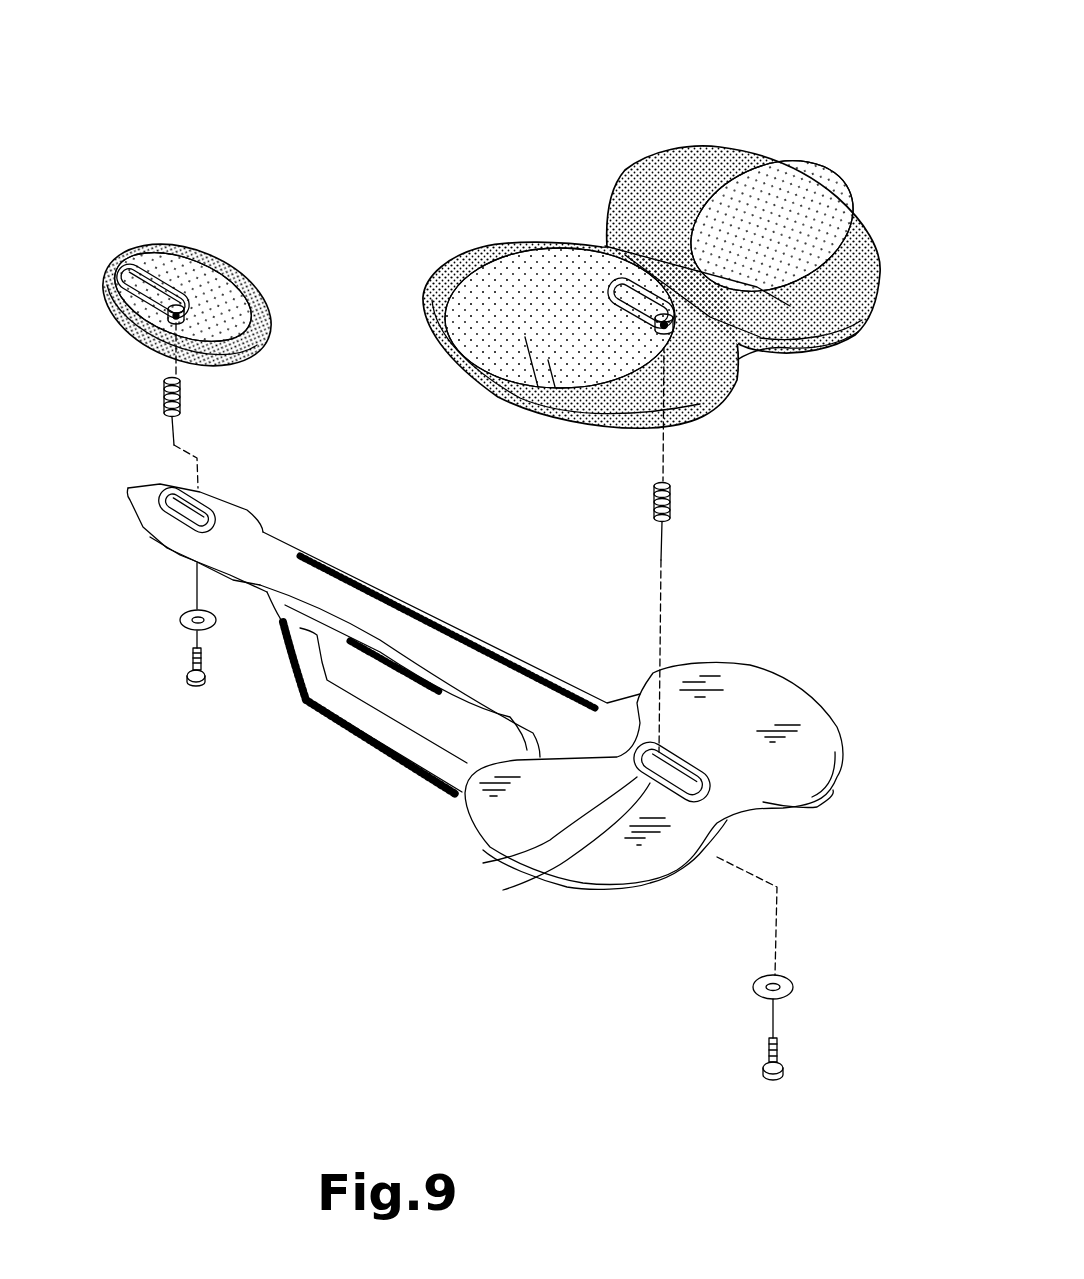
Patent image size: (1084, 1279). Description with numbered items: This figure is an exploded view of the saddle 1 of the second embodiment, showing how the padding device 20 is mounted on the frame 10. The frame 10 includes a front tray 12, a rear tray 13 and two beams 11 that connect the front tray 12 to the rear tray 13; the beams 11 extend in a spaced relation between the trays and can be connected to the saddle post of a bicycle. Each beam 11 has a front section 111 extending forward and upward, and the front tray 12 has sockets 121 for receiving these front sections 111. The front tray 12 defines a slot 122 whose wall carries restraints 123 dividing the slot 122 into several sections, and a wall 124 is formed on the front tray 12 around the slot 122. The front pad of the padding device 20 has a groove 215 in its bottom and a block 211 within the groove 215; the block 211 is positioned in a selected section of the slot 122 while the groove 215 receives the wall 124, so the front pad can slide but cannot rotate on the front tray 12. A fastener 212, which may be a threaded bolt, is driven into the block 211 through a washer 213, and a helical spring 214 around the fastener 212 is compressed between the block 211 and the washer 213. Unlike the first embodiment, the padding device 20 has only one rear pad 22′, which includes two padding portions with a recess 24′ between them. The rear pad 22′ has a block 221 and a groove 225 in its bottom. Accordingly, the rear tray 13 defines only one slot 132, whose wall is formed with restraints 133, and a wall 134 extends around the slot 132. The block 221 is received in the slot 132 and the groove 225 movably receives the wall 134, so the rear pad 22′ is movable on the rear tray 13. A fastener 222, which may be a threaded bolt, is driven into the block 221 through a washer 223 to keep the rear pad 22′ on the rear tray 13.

The saddle 1 is at (303, 161).
The frame 10 is at (280, 888).
The beams 11 is at (367, 737).
The front tray 12 is at (180, 560).
The rear tray 13 is at (723, 843).
The front section 111 is at (290, 683).
The sockets 121 is at (277, 627).
The slot 122 is at (163, 490).
The restraints 123 is at (200, 503).
The wall 124 is at (172, 517).
The slot 132 is at (503, 890).
The restraints 133 is at (667, 787).
The wall 134 is at (490, 857).
The padding device 20 is at (549, 110).
The rear pad 22′ is at (584, 187).
The recess 24′ is at (757, 358).
The block 211 is at (160, 343).
The fastener 212 is at (187, 681).
The washer 213 is at (180, 624).
The helical spring 214 is at (185, 400).
The groove 215 is at (118, 316).
The block 221 is at (667, 332).
The fastener 222 is at (785, 1063).
The washer 223 is at (793, 986).
The groove 225 is at (700, 345).